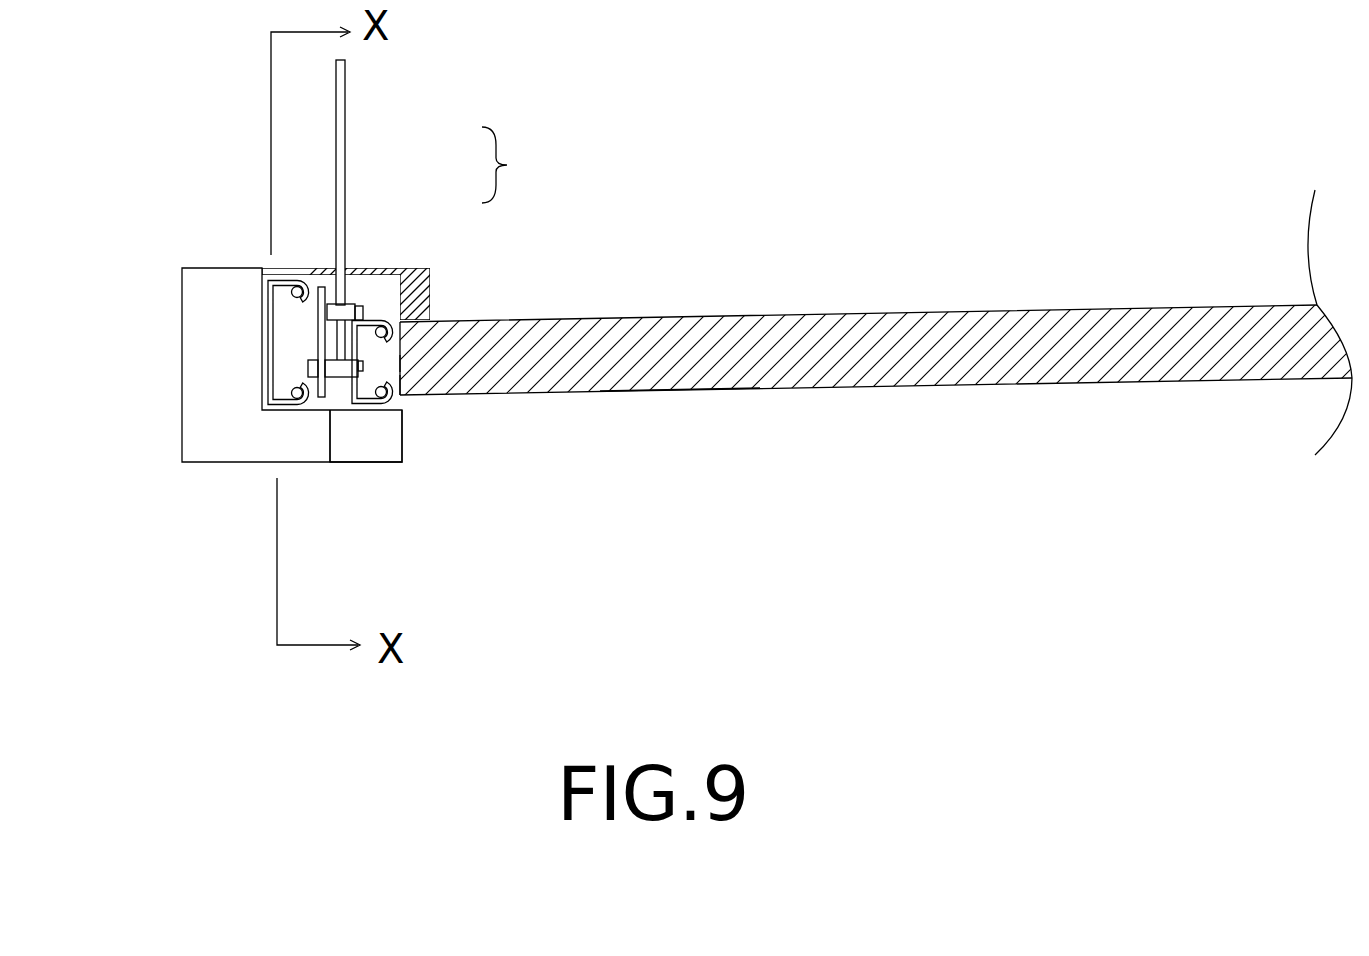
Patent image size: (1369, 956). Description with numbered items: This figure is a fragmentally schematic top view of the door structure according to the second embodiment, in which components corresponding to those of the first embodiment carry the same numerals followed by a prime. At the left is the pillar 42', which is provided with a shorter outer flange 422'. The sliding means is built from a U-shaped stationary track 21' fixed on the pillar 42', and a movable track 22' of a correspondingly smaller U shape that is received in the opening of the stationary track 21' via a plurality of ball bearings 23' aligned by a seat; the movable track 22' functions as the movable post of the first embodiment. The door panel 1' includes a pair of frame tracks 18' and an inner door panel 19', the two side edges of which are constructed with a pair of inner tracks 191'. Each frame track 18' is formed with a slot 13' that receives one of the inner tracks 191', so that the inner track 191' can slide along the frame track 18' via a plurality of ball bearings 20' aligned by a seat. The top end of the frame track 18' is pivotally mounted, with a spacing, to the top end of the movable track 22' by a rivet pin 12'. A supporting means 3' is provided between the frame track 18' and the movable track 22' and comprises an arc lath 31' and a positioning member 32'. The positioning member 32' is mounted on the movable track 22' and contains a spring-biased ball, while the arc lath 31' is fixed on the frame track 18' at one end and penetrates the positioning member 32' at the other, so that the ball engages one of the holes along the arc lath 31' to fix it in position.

The door panel 1' is at (844, 322).
The supporting means 3' is at (517, 165).
The rivet pin 12' is at (470, 341).
The slot 13' is at (507, 400).
The frame track 18' is at (440, 274).
The inner door panel 19' is at (689, 429).
The ball bearings 20' is at (415, 446).
The stationary track 21' is at (237, 401).
The movable track 22' is at (237, 342).
The ball bearings 23' is at (319, 456).
The arc lath 31' is at (403, 267).
The positioning member 32' is at (406, 182).
The pillar 42' is at (328, 318).
The inner track 191' is at (464, 420).
The outer flange 422' is at (375, 482).